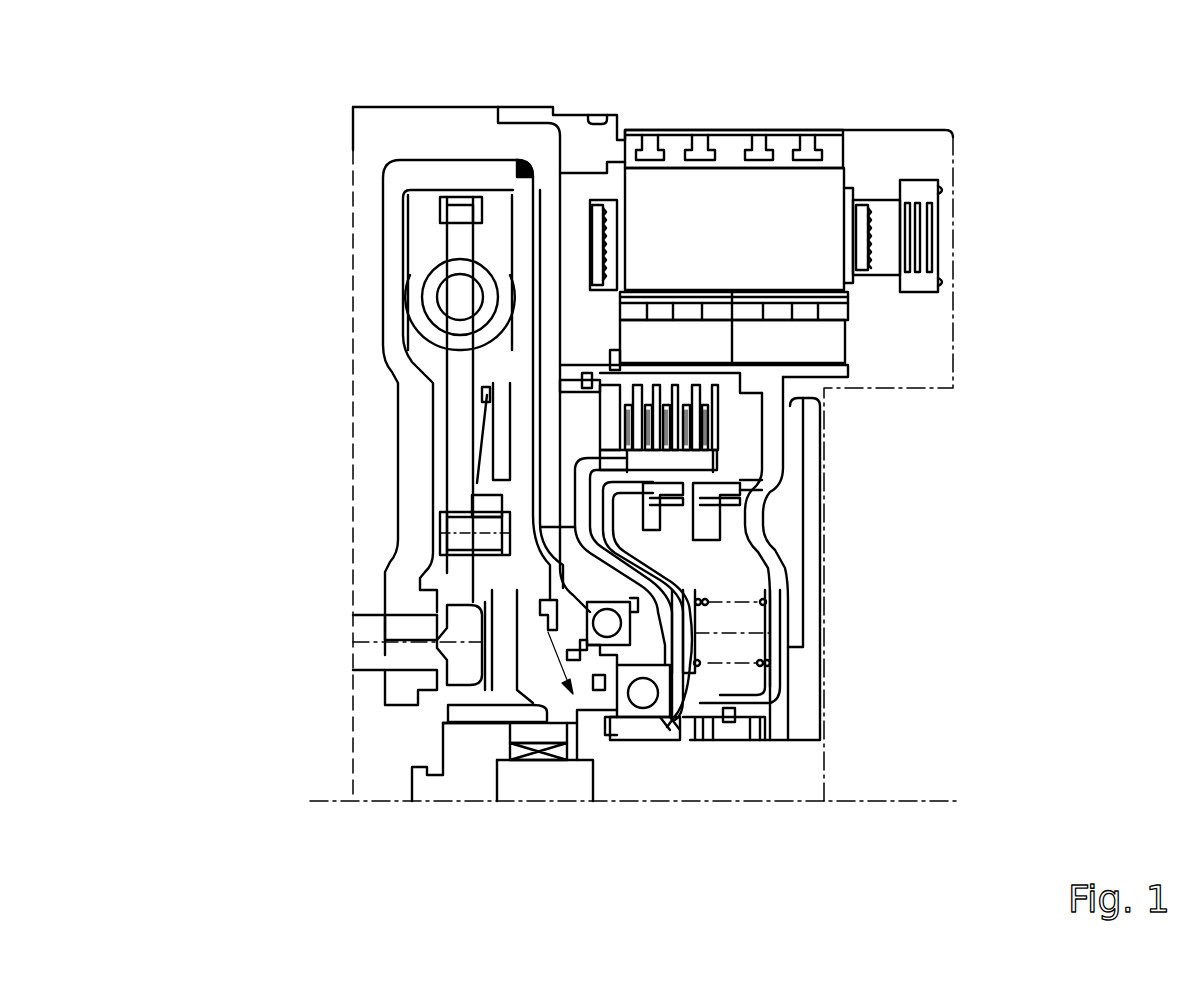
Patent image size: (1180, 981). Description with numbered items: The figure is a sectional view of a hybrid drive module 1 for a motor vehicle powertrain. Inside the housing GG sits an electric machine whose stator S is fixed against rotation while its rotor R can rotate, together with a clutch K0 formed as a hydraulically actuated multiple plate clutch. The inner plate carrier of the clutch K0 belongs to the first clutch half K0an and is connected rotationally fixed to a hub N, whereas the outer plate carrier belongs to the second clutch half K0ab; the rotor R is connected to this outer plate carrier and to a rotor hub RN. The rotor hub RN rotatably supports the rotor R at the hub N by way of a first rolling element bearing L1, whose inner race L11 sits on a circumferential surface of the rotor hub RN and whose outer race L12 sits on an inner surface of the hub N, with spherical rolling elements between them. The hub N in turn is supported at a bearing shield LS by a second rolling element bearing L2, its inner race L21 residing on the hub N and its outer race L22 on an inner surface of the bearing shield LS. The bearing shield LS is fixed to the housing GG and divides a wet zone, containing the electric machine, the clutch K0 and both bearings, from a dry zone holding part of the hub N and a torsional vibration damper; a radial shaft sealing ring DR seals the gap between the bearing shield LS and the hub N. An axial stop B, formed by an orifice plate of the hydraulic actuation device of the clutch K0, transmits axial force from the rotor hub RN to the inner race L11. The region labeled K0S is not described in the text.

The hybrid drive module 1 is at (988, 115).
The housing GG is at (853, 128).
The stator S is at (716, 210).
The rotor R is at (807, 340).
The clutch K0 is at (581, 428).
The second half of the clutch K0ab is at (573, 372).
The first half of the clutch K0an is at (578, 493).
The clutch actuation / shaft of separating clutch K0S is at (633, 545).
The bearing shield LS is at (550, 552).
The radial shaft sealing ring DR is at (560, 687).
The hub N is at (458, 743).
The rotor hub RN is at (533, 782).
The first rolling element bearing L1 is at (624, 733).
The inner race L11 is at (660, 714).
The outer race L12 is at (678, 717).
The second rolling element bearing L2 is at (636, 620).
The inner race L21 is at (617, 640).
The outer race L22 is at (540, 597).
The axial stop B is at (710, 722).